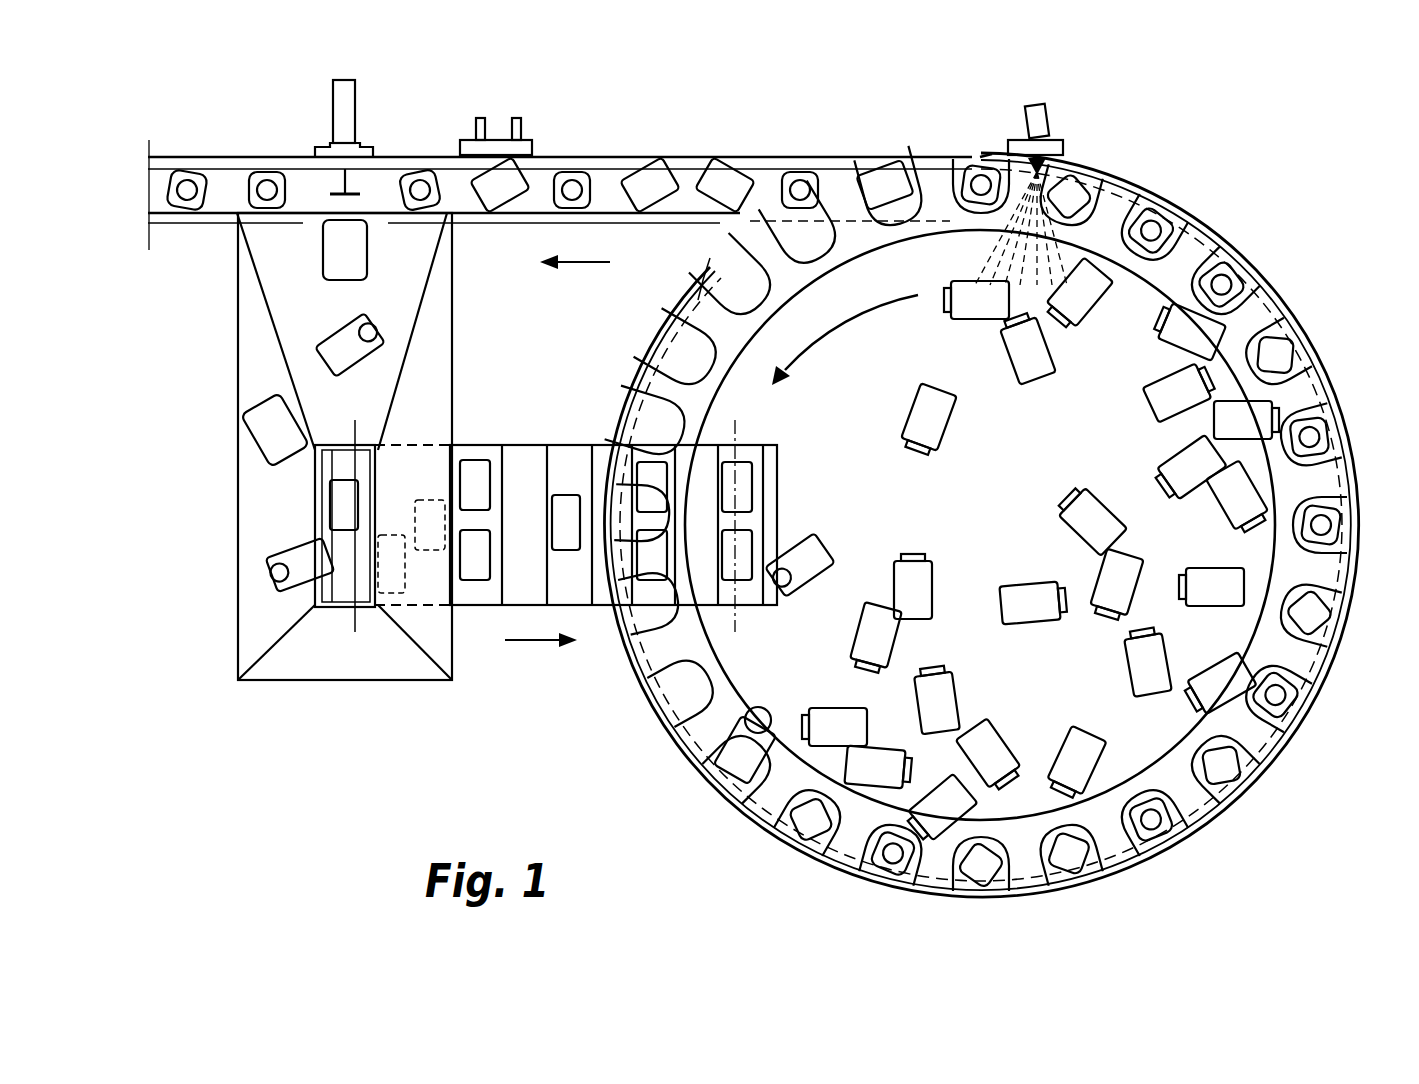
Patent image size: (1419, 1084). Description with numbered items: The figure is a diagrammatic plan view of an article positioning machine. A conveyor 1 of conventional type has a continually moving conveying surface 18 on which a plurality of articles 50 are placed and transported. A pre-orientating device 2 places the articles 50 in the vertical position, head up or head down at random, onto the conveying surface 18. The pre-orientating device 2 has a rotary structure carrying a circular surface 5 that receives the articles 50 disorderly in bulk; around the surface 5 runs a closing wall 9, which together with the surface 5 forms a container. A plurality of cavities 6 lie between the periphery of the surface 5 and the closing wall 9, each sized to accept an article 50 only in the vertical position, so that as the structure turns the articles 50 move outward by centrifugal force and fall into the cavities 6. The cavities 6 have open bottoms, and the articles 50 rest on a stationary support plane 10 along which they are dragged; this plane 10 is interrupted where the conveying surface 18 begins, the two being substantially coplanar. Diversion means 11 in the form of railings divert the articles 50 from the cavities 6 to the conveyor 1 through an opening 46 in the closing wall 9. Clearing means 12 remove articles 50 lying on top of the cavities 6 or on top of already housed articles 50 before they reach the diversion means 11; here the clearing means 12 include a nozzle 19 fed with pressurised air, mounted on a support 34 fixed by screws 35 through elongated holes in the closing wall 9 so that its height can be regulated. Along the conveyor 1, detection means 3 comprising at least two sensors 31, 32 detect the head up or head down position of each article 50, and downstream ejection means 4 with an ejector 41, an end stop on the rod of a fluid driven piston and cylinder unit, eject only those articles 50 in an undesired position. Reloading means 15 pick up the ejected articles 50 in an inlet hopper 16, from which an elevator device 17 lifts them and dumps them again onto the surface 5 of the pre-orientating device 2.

The conveyor 1 is at (707, 122).
The pre-orientating device 2 is at (994, 520).
The detection means 3 is at (519, 101).
The ejection means 4 is at (337, 137).
The circular surface 5 is at (1005, 523).
The cavities 6 is at (665, 722).
The closing wall 9 is at (994, 517).
The stationary support plane 10 is at (1298, 360).
The diversion means 11 is at (945, 248).
The clearing means 12 is at (1043, 168).
The reloading means 15 is at (546, 483).
The inlet hopper 16 is at (245, 490).
The elevator device 17 is at (510, 445).
The conveying surface 18 is at (688, 172).
The nozzle 19 is at (1026, 128).
The sensor 31 is at (525, 135).
The sensor 32 is at (480, 138).
The support 34 is at (1012, 148).
The screws 35 is at (1063, 148).
The ejector 41 is at (352, 192).
The opening 46 is at (712, 258).
The articles 50 is at (735, 175).